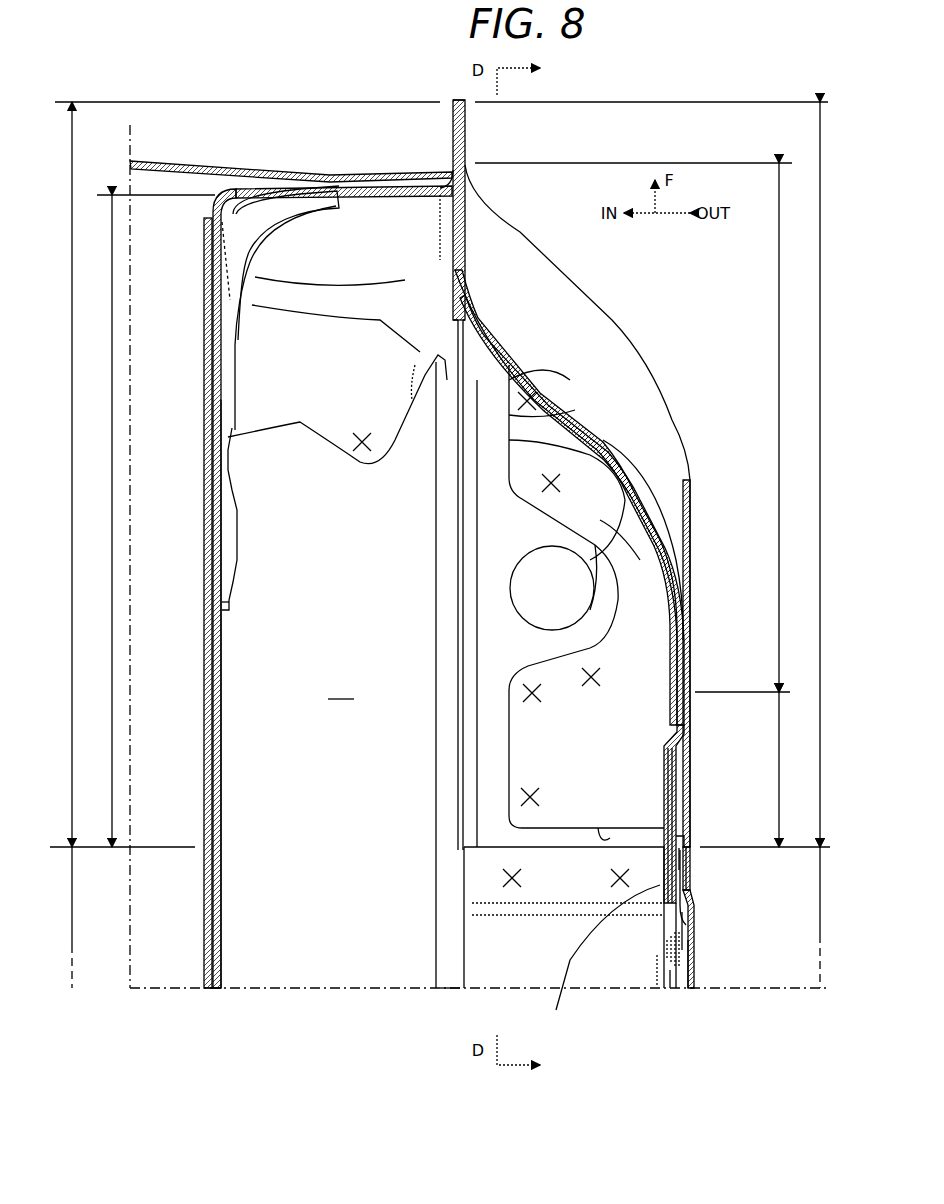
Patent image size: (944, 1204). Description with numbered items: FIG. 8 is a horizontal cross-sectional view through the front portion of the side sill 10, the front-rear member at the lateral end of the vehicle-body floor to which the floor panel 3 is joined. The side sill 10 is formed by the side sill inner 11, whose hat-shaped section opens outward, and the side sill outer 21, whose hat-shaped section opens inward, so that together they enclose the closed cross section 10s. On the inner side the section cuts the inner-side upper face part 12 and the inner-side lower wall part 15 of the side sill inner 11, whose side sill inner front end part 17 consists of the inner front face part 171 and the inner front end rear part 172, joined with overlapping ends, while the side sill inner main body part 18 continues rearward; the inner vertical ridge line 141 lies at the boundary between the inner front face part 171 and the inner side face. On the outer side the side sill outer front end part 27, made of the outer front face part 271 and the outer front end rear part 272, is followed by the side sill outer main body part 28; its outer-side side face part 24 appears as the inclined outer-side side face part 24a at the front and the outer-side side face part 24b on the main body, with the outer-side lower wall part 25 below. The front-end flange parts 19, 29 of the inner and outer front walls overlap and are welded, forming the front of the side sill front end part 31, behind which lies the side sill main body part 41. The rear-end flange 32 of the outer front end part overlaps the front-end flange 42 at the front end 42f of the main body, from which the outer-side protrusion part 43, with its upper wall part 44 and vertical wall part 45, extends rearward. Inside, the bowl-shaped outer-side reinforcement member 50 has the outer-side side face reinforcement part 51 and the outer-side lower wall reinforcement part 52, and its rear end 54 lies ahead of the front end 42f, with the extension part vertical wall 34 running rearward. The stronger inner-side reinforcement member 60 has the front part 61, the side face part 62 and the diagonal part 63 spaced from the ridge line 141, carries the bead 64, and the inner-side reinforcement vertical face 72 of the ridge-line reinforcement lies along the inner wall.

The floor panel 3 is at (210, 346).
The side sill 10 is at (560, 234).
The closed cross section 10s is at (341, 691).
The side sill inner 11 is at (200, 280).
The inner-side upper face part 12 is at (204, 792).
The inner-side lower wall part 15 is at (326, 977).
The side sill inner front end part 17 is at (436, 474).
The side sill inner main body part 18 is at (59, 917).
The front-end flange part 19 is at (452, 144).
The side sill outer 21 is at (678, 330).
The outer-side side face part 24 is at (695, 950).
The outer-side side face part of outer front face part 24a is at (692, 778).
The outer-side side face part of side sill outer main body part 24b is at (696, 980).
The outer-side lower wall part 25 is at (503, 970).
The side sill outer front end part 27 is at (775, 474).
The side sill outer main body part 28 is at (833, 917).
The front-end flange part 29 is at (468, 136).
The side sill front end part 31 is at (599, 284).
The rear-end flange 32 is at (692, 862).
The extension part vertical wall 34 is at (593, 961).
The side sill main body part 41 is at (700, 934).
The front-end flange 42 is at (692, 886).
The front end of side sill outer main body part 42f is at (684, 840).
The outer-side protrusion part 43 is at (660, 952).
The upper wall part 44 is at (676, 987).
The vertical wall part 45 is at (656, 988).
The outer-side reinforcement member 50 is at (505, 757).
The outer-side side face reinforcement part 51 is at (676, 700).
The outer-side lower wall reinforcement part 52 is at (540, 663).
The rear end of outer-side reinforcement member 54 is at (598, 828).
The inner-side reinforcement member 60 is at (238, 360).
The inner-side reinforcement member front part 61 is at (320, 212).
The inner-side reinforcement member side face part 62 is at (232, 605).
The diagonal part 63 is at (278, 228).
The bead 64 is at (238, 532).
The inner-side reinforcement vertical face 72 is at (224, 768).
The inner vertical ridge line 141 is at (236, 184).
The inner front face part 171 is at (334, 186).
The inner front end rear part 172 is at (146, 521).
The outer front face part 271 is at (643, 427).
The outer front end rear part 272 is at (795, 769).